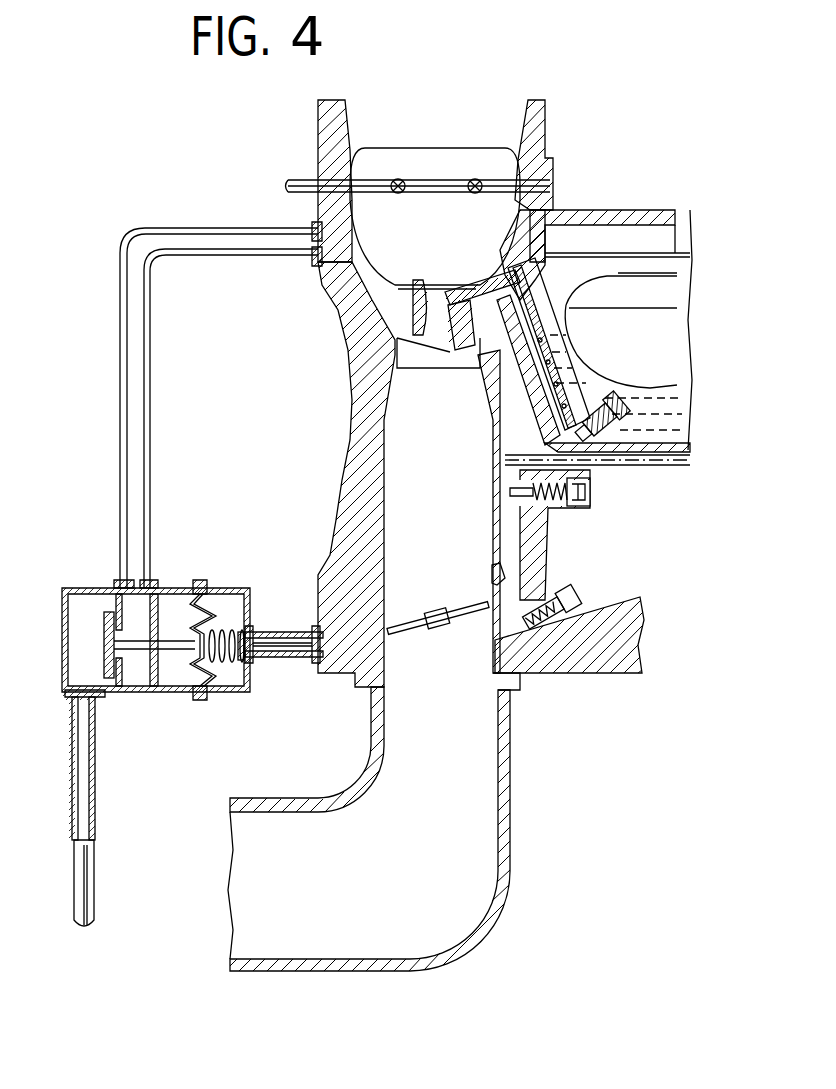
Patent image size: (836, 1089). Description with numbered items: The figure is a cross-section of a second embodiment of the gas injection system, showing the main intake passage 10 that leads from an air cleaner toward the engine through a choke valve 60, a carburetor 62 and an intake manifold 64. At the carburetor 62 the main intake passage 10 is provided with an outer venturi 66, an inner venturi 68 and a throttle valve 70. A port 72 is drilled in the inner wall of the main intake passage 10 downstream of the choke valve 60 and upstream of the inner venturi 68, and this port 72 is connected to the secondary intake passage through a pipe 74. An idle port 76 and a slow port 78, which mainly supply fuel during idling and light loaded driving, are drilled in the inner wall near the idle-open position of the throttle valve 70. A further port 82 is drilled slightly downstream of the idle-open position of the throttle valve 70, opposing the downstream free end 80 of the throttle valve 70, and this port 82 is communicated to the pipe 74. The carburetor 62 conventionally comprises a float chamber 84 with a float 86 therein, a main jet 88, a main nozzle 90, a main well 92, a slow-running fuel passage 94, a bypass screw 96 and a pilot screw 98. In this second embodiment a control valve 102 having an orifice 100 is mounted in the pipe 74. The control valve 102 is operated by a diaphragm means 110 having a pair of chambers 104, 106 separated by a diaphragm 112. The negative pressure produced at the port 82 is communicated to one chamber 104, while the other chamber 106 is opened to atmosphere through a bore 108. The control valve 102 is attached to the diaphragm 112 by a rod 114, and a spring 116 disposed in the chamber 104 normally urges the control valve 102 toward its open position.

The main intake passage 10 is at (446, 503).
The choke valve 60 is at (490, 150).
The carburetor 62 is at (640, 522).
The intake manifold 64 is at (510, 768).
The outer venturi 66 is at (405, 355).
The inner venturi 68 is at (460, 350).
The throttle valve 70 is at (438, 612).
The port 72 is at (322, 288).
The pipe 74 is at (120, 470).
The idle port 76 is at (492, 640).
The slow port 78 is at (505, 570).
The free end 80 is at (393, 630).
The port 82 is at (340, 650).
The float chamber 84 is at (625, 233).
The float 86 is at (655, 348).
The main jet 88 is at (605, 405).
The main nozzle 90 is at (462, 292).
The main well 92 is at (560, 372).
The slow-running fuel passage 94 is at (527, 540).
The bypass screw 96 is at (590, 492).
The pilot screw 98 is at (575, 606).
The orifice 100 is at (104, 626).
The control valve 102 is at (104, 656).
The chamber 104 is at (226, 686).
The chamber 106 is at (170, 684).
The bore 108 is at (172, 598).
The diaphragm means 110 is at (250, 700).
The diaphragm 112 is at (197, 590).
The rod 114 is at (136, 650).
The spring 116 is at (224, 630).